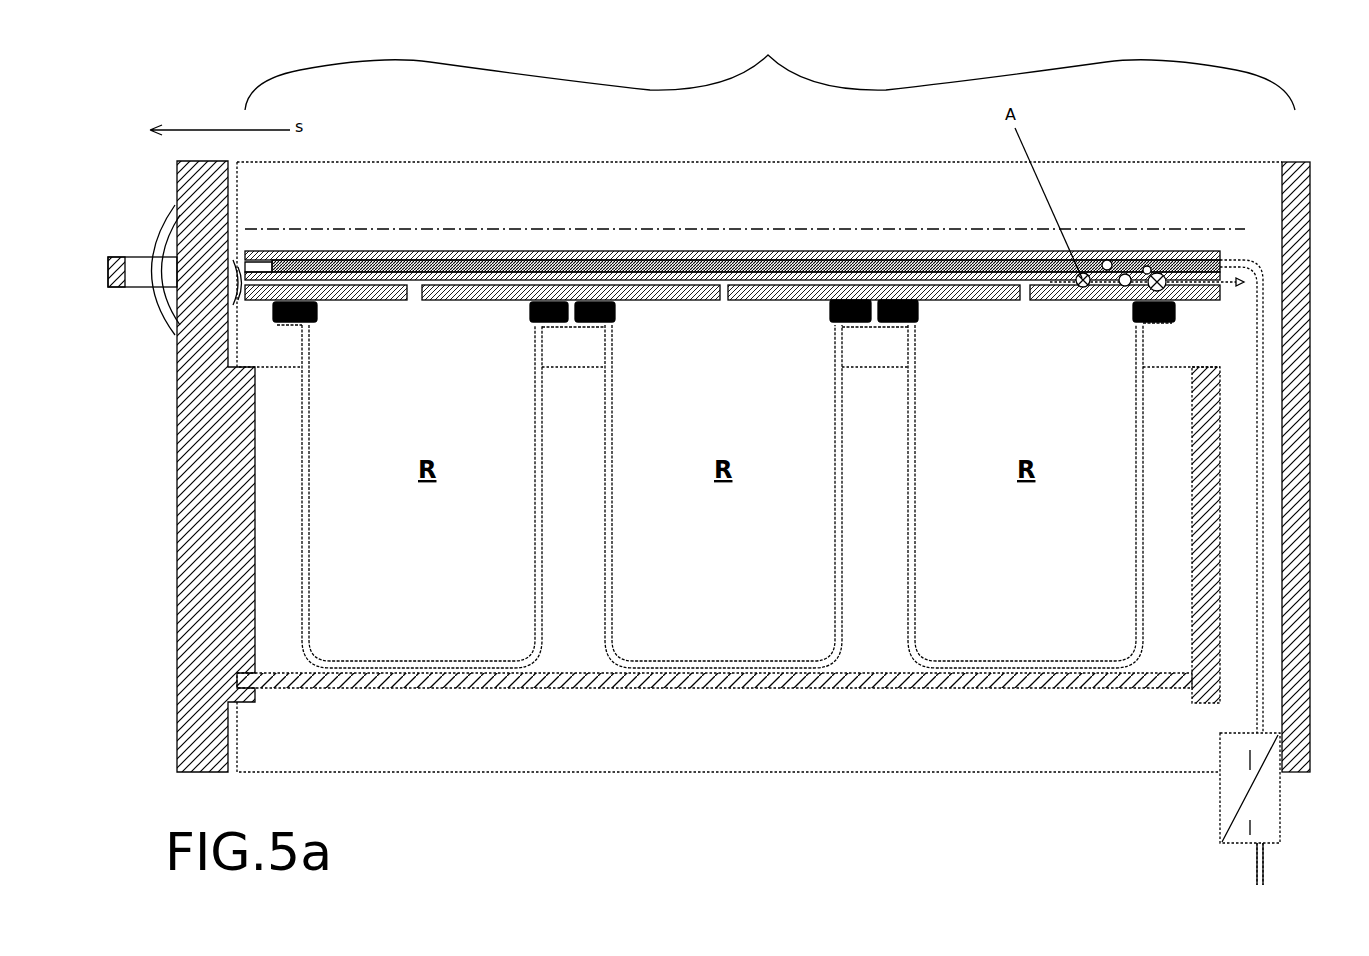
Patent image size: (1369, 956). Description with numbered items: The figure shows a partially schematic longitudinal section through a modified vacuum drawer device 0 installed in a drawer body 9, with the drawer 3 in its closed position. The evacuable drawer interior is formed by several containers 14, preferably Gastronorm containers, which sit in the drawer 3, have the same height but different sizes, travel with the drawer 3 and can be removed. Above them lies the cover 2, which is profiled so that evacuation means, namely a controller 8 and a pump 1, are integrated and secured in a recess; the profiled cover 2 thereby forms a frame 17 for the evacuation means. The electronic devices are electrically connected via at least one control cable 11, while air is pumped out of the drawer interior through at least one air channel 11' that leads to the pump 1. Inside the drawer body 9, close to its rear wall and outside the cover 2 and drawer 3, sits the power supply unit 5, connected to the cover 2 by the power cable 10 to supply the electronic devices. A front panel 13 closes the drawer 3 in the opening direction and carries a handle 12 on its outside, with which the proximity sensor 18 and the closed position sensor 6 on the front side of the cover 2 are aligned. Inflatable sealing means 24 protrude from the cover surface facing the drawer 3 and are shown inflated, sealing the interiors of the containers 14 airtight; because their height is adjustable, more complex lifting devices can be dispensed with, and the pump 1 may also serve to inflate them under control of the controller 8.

The electrochemical cell assembly 0 is at (770, 58).
The pump 1 is at (1160, 250).
The cover 2 is at (790, 252).
The drawer 3 is at (600, 690).
The power supply unit 5 is at (1220, 760).
The closed position sensor 6 is at (270, 308).
The controller 8 is at (1110, 270).
The drawer body 9 is at (1220, 162).
The power cable 10 is at (1275, 885).
The control cable 11 is at (746, 238).
The air channel 11' is at (761, 188).
The handle 12 is at (150, 290).
The front panel 13 is at (177, 465).
The containers 14 is at (533, 530).
The frame 17 is at (1222, 252).
The proximity sensor 18 is at (265, 255).
The inflatable sealing means 24 is at (537, 293).